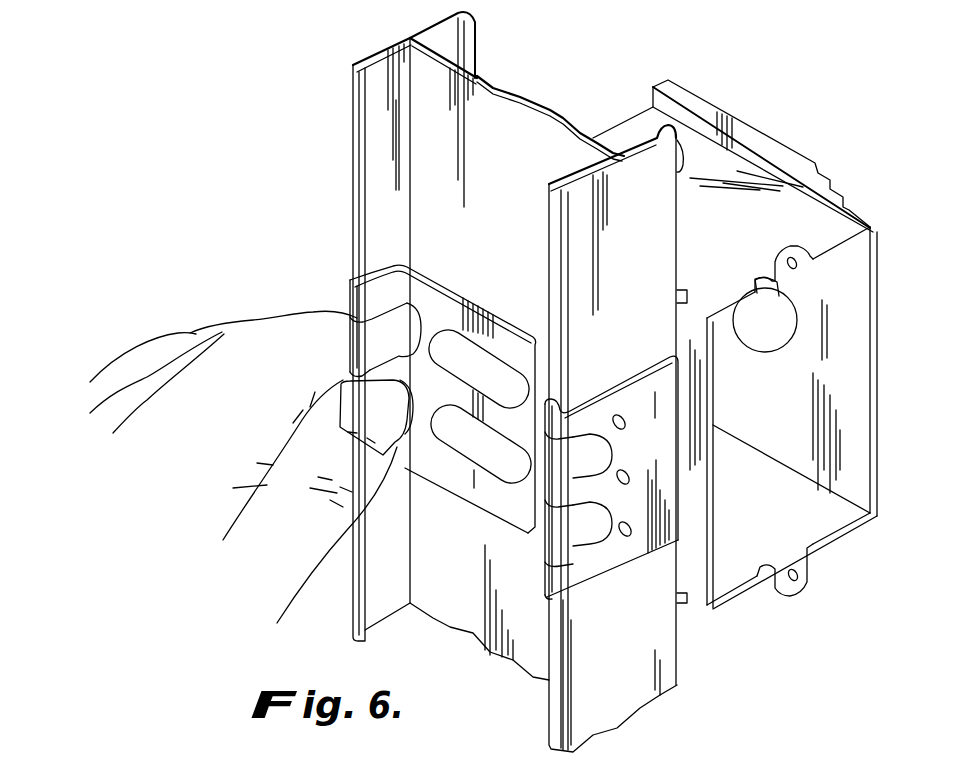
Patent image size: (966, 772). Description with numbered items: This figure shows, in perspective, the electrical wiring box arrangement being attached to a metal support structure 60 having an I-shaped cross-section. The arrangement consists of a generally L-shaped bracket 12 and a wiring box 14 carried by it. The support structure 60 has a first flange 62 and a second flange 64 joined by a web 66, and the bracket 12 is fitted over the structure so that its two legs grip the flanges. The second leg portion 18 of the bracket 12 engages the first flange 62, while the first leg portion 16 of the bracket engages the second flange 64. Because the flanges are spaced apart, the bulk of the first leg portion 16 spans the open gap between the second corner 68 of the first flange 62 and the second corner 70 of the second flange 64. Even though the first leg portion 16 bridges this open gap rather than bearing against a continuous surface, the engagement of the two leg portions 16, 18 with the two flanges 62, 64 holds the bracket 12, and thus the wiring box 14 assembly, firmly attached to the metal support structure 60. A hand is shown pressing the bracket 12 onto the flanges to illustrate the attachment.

The bracket 12 is at (514, 443).
The wiring box 14 is at (877, 300).
The first leg portion 16 is at (521, 514).
The second leg portion 18 is at (666, 449).
The metal support structure 60 is at (543, 382).
The first flange 62 is at (651, 250).
The second flange 64 is at (394, 229).
The web 66 is at (508, 251).
The second corner 68 is at (678, 221).
The second corner 70 is at (463, 45).